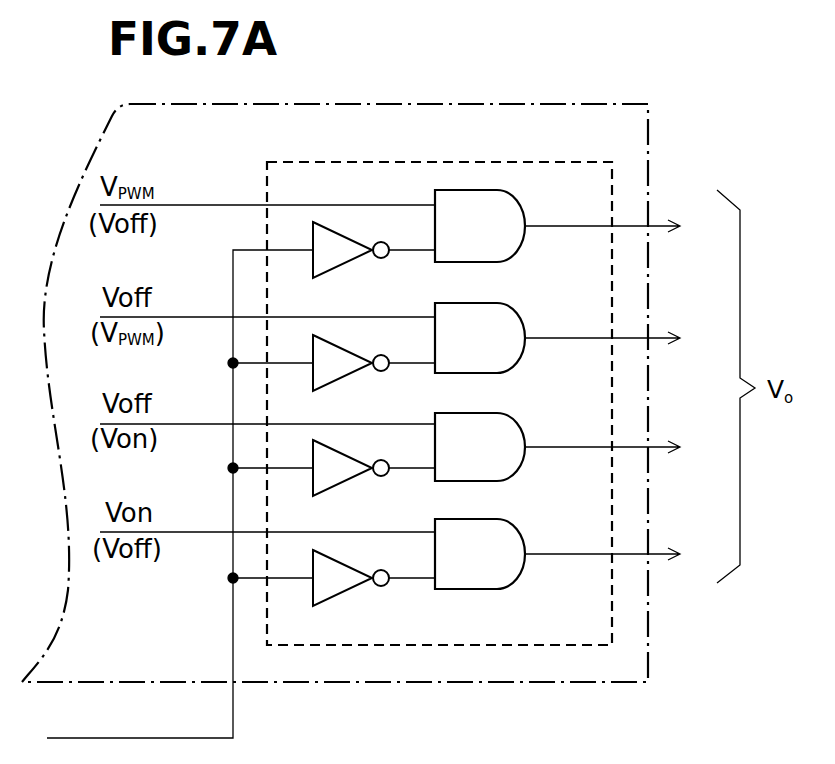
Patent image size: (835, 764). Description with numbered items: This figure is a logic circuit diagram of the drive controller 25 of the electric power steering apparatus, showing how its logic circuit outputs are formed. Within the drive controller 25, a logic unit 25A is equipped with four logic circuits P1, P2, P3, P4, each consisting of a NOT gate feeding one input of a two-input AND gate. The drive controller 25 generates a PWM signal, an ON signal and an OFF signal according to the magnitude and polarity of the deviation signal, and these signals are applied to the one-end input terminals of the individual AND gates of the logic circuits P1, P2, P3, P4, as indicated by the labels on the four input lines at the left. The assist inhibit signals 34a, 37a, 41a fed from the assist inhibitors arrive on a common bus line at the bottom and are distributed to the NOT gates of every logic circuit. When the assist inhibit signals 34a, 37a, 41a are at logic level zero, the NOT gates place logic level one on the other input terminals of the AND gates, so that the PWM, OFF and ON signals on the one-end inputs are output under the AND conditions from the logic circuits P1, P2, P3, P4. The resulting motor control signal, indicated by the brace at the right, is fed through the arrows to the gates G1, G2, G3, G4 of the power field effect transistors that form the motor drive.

The drive controller 25 is at (327, 104).
The logic unit 25A is at (400, 160).
The logic circuit P1 is at (525, 271).
The logic circuit P2 is at (525, 381).
The logic circuit P3 is at (525, 489).
The logic circuit P4 is at (525, 596).
The gate G1 is at (624, 226).
The gate G2 is at (624, 338).
The gate G3 is at (624, 447).
The gate G4 is at (624, 554).
The assist inhibit signal 34a is at (180, 494).
The assist inhibit signal 37a is at (180, 494).
The assist inhibit signal 41a is at (180, 494).